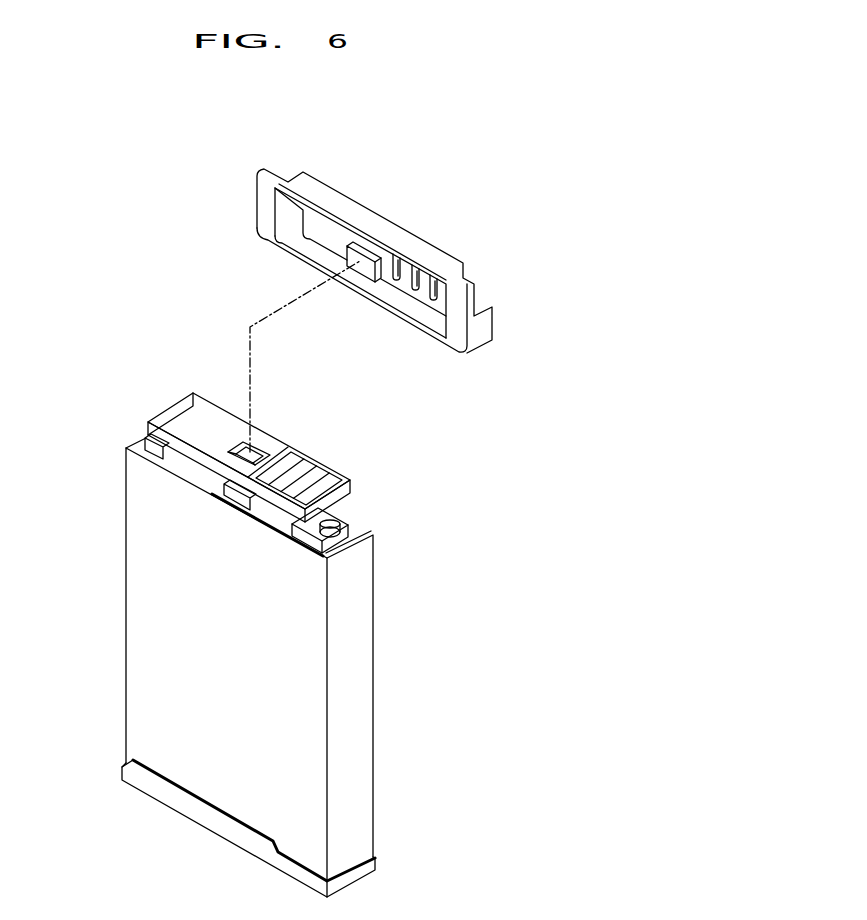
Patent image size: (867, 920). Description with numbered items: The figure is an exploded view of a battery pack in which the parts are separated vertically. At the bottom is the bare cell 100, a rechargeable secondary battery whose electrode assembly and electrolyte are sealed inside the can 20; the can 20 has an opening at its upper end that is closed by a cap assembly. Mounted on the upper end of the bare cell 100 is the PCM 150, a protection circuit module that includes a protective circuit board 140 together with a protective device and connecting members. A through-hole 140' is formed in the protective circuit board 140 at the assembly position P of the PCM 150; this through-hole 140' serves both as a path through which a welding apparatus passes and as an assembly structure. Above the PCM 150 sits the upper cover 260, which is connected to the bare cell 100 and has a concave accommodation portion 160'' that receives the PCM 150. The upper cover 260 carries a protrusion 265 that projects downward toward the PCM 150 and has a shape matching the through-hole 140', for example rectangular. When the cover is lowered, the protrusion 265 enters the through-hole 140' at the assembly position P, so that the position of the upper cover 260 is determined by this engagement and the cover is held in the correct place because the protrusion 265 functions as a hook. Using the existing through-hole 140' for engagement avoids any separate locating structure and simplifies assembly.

The bare cell 100 is at (392, 768).
The can 20 is at (363, 651).
The PCM 150 is at (135, 409).
The protective circuit board 140 is at (244, 429).
The through-hole 140' is at (282, 426).
The upper cover 260 is at (436, 258).
The protrusion 265 is at (368, 248).
The accommodation portion 160'' is at (310, 252).
The assembly position P is at (237, 412).